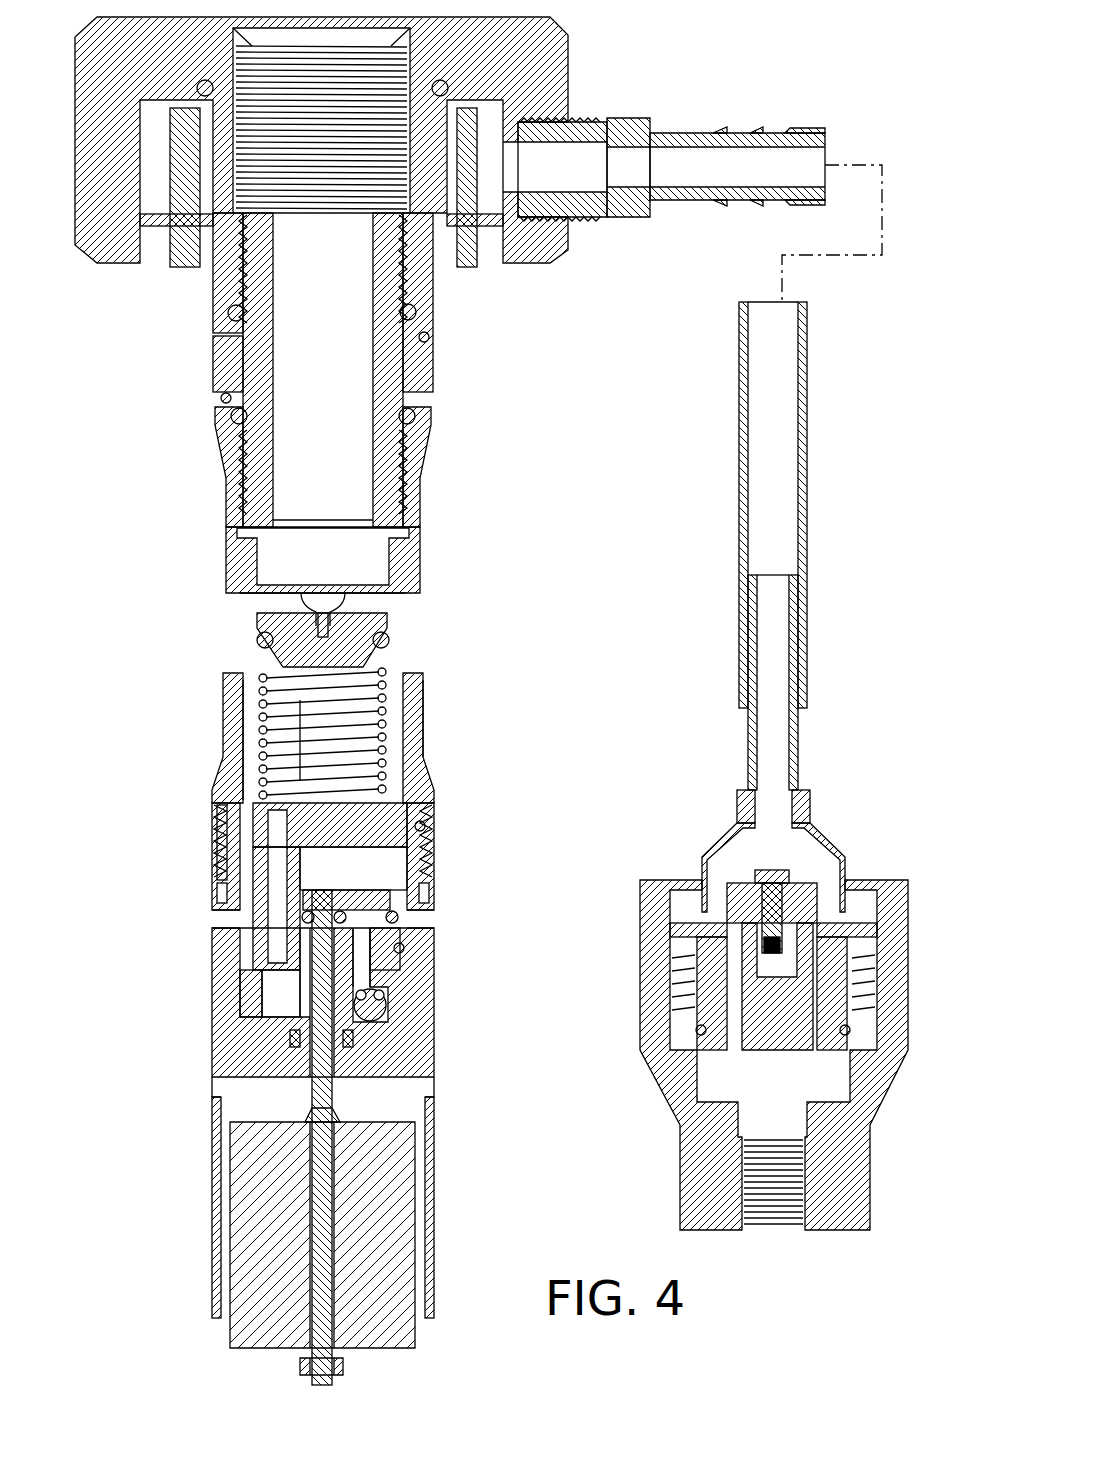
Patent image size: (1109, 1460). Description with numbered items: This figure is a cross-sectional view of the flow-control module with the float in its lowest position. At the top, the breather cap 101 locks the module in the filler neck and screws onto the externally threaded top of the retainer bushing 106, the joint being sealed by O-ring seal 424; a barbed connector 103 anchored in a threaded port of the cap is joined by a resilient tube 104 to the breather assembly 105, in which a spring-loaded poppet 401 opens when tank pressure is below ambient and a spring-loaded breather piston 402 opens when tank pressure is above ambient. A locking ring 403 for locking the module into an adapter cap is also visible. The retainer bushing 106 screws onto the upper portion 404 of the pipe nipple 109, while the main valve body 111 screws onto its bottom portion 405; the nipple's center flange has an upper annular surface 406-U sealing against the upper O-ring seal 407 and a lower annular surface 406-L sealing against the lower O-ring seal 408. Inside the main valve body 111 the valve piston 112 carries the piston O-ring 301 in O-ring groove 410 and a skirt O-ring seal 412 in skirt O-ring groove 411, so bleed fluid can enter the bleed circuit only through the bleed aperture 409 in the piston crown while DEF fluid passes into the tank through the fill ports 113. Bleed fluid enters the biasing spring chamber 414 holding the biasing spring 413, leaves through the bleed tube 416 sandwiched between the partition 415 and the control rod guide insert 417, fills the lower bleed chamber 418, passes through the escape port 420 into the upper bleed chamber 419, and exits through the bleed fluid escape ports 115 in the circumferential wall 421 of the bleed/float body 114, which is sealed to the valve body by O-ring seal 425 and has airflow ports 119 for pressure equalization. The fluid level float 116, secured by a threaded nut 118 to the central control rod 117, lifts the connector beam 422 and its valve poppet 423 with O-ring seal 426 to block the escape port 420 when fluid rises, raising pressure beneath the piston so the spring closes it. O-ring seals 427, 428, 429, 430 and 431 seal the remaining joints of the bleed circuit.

The breather cap 101 is at (547, 52).
The barbed connector 103 is at (632, 120).
The resilient tube 104 is at (740, 433).
The breather assembly 105 is at (650, 1128).
The retainer bushing 106 is at (217, 302).
The pipe nipple 109 is at (423, 370).
The main valve body 111 is at (404, 566).
The valve piston 112 is at (245, 673).
The fill port 113 is at (405, 600).
The bleed/float body 114 is at (403, 1050).
The bleed fluid escape ports 115 is at (210, 917).
The fluid level float 116 is at (383, 1212).
The central control rod 117 is at (317, 1218).
The threaded nut 118 is at (300, 1366).
The airflow ports 119 is at (210, 1087).
The O-ring seal 301 is at (300, 640).
The spring-loaded poppet 401 is at (797, 870).
The spring-loaded breather piston 402 is at (703, 1037).
The locking ring 403 is at (178, 247).
The upper portion of the pipe nipple 404 is at (388, 277).
The bottom portion of the pipe nipple 405 is at (257, 477).
The lower annular surface 406-L is at (222, 395).
The upper annular surface 406-U is at (428, 342).
The upper O-ring seal 407 is at (217, 333).
The lower O-ring seal 408 is at (414, 420).
The bleed aperture 409 is at (305, 600).
The O-ring groove 410 is at (373, 648).
The skirt O-ring groove 411 is at (243, 763).
The skirt O-ring seal 412 is at (410, 772).
The biasing spring 413 is at (278, 722).
The biasing spring chamber 414 is at (377, 737).
The partition 415 is at (370, 817).
The bleed tube 416 is at (215, 882).
The control rod guide insert 417 is at (250, 985).
The lower bleed chamber 418 is at (268, 998).
The upper bleed chamber 419 is at (350, 867).
The escape port 420 is at (380, 928).
The circumferential wall 421 is at (385, 975).
The connector beam 422 is at (353, 890).
The valve poppet 423 is at (377, 985).
The O-ring seal 424 is at (447, 88).
The O-ring seal 425 is at (425, 822).
The O-ring seal 426 is at (386, 1003).
The O-ring seal 427 is at (212, 827).
The O-ring seal 428 is at (212, 852).
The O-ring seal 429 is at (240, 930).
The O-ring seal 430 is at (404, 948).
The O-ring seal 431 is at (292, 1045).